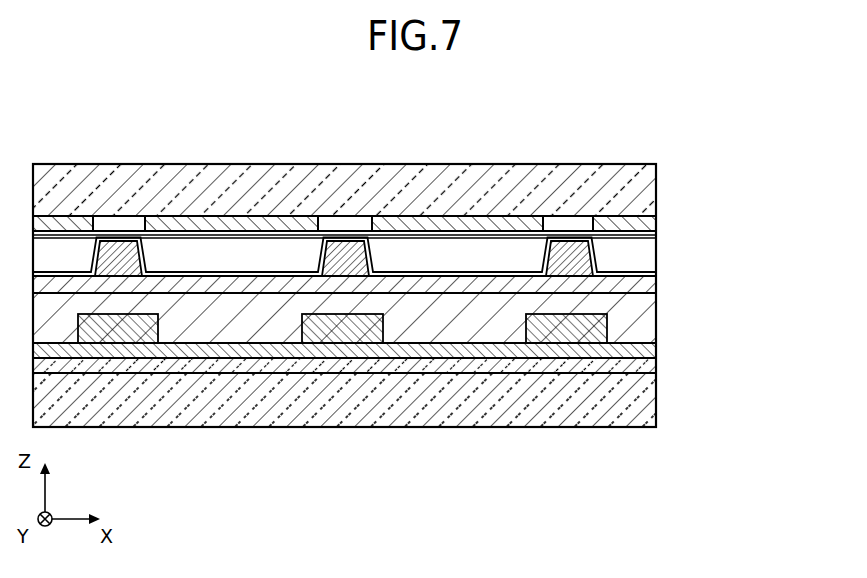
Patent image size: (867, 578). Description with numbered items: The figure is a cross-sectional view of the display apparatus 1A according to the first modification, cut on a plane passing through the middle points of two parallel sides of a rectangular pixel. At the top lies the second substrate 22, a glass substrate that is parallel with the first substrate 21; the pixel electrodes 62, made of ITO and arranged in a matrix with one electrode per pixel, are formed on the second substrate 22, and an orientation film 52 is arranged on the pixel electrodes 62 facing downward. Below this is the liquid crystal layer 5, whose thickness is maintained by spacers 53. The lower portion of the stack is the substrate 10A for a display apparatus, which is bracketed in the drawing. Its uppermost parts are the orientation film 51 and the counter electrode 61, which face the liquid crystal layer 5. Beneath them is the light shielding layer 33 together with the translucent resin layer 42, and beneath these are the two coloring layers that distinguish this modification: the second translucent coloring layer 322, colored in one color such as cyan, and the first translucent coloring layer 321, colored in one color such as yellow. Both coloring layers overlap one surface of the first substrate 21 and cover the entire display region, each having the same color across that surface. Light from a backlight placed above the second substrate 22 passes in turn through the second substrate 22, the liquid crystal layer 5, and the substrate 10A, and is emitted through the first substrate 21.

The display apparatus 1A is at (643, 133).
The second substrate 22 is at (652, 191).
The pixel electrode 62 is at (222, 222).
The orientation film 52 is at (657, 237).
The liquid crystal layer 5 is at (652, 258).
The spacer 53 is at (117, 241).
The orientation film 51 is at (656, 275).
The counter electrode 61 is at (650, 287).
The translucent resin layer 42 is at (607, 336).
The light shielding layer 33 is at (656, 337).
The second translucent coloring layer 322 is at (656, 352).
The first translucent coloring layer 321 is at (656, 370).
The first substrate 21 is at (650, 398).
The substrate for a display apparatus 10A is at (757, 265).